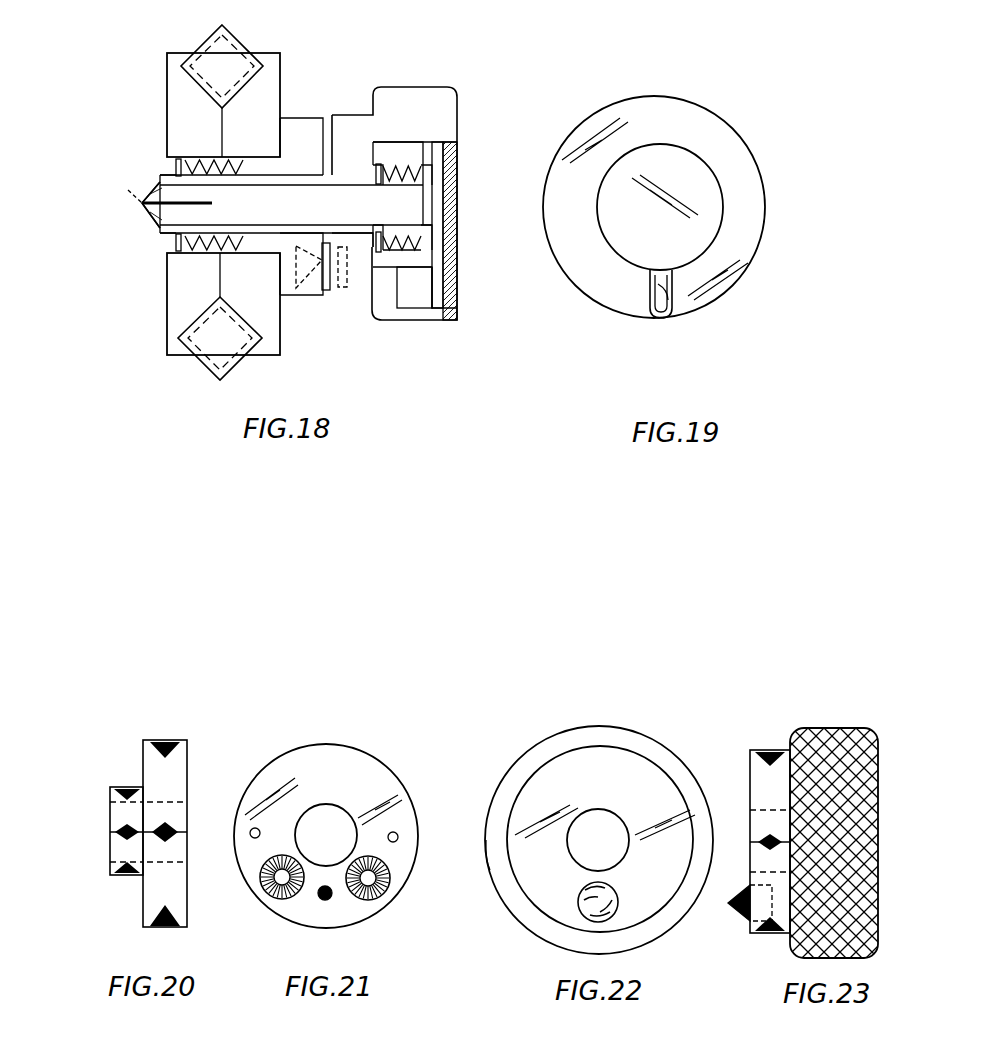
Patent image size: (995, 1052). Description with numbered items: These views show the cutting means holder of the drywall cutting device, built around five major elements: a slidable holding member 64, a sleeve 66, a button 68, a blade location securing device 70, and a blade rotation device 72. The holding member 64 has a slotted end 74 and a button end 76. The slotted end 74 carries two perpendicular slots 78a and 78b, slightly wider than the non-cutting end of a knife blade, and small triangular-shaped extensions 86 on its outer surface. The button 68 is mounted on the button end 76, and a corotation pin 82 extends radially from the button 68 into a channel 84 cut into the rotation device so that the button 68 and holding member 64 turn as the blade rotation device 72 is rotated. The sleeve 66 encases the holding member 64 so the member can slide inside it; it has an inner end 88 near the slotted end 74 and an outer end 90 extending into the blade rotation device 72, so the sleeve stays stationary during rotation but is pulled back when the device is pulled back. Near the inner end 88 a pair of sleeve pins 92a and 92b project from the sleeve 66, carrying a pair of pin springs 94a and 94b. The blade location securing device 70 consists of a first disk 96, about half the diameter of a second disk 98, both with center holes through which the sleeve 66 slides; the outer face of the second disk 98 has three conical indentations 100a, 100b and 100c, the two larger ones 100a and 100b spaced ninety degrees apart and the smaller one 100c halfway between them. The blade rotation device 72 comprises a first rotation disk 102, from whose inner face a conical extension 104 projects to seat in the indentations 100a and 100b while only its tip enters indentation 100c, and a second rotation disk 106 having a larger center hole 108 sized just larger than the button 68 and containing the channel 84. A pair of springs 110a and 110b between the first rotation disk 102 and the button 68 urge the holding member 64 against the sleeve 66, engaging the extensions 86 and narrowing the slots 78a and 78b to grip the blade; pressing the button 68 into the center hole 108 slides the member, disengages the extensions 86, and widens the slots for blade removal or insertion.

In FIG. 18, the slidable holding member 64 is at (352, 200).
In FIG. 18, the sleeve 66 is at (342, 182).
In FIG. 18, the button 68 is at (452, 165).
In FIG. 19, the button 68 is at (715, 190).
In FIG. 20, the blade location securing device 70 is at (160, 738).
In FIG. 21, the blade location securing device 70 is at (330, 744).
In FIG. 18, the blade rotation device 72 is at (394, 152).
In FIG. 19, the blade rotation device 72 is at (665, 95).
In FIG. 22, the blade rotation device 72 is at (634, 722).
In FIG. 23, the blade rotation device 72 is at (817, 712).
In FIG. 18, the slotted end 74 is at (152, 214).
In FIG. 18, the button end 76 is at (425, 212).
In FIG. 18, the slot 78a is at (140, 203).
In FIG. 18, the slot 78b is at (128, 190).
In FIG. 18, the corotation pin 82 is at (455, 290).
In FIG. 19, the corotation pin 82 is at (675, 300).
In FIG. 18, the channel 84 is at (412, 297).
In FIG. 19, the channel 84 is at (660, 300).
In FIG. 18, the triangular-shaped extensions 86 is at (150, 182).
In FIG. 18, the inner end 88 is at (160, 240).
In FIG. 18, the outer end 90 is at (405, 152).
In FIG. 18, the sleeve pin 92a is at (172, 160).
In FIG. 18, the sleeve pin 92b is at (172, 250).
In FIG. 18, the pin spring 94a is at (232, 155).
In FIG. 18, the pin spring 94b is at (225, 255).
In FIG. 20, the first disk 96 is at (110, 800).
In FIG. 20, the second disk 98 is at (172, 782).
In FIG. 21, the second disk 98 is at (350, 780).
In FIG. 21, the conical indentation 100a is at (265, 893).
In FIG. 21, the conical indentation 100b is at (382, 897).
In FIG. 21, the conical indentation 100c is at (322, 902).
In FIG. 22, the first rotation disk 102 is at (563, 758).
In FIG. 23, the first rotation disk 102 is at (760, 775).
In FIG. 22, the conical extension 104 is at (618, 893).
In FIG. 23, the conical extension 104 is at (733, 905).
In FIG. 22, the second rotation disk 106 is at (548, 928).
In FIG. 23, the second rotation disk 106 is at (855, 730).
In FIG. 18, the center hole 108 is at (412, 150).
In FIG. 18, the spring 110a is at (430, 185).
In FIG. 18, the spring 110b is at (432, 240).